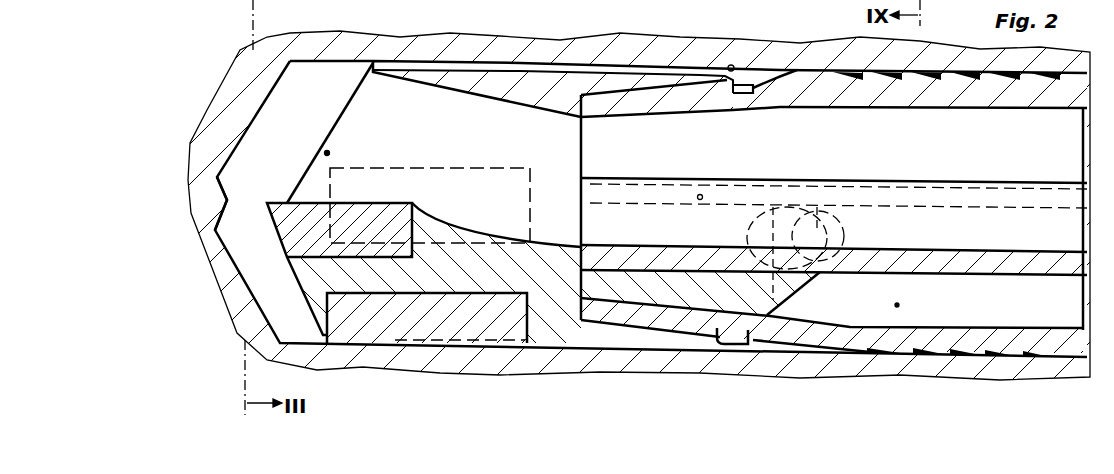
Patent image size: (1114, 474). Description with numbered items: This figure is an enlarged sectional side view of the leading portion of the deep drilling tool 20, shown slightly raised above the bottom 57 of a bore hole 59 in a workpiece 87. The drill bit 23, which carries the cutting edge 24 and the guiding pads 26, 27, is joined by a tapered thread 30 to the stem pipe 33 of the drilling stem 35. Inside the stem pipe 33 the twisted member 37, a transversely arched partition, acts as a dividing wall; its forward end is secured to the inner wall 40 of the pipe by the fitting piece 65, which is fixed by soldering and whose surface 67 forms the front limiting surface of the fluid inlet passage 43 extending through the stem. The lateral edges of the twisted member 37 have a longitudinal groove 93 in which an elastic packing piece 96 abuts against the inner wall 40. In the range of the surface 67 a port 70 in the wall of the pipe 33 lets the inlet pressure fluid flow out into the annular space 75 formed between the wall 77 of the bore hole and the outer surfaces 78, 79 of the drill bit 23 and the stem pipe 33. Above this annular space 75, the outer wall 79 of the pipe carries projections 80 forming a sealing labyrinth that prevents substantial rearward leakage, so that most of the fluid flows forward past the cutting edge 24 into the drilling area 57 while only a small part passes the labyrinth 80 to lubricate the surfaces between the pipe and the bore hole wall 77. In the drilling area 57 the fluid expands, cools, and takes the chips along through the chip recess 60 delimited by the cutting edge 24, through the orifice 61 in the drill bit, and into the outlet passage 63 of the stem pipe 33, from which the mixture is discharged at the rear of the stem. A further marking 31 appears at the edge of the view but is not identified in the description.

The deep drilling tool 20 is at (343, 77).
The drill bit 23 is at (332, 120).
The cutting edge 24 is at (305, 227).
The guiding pad 26 is at (442, 327).
The guiding pad 27 is at (428, 182).
The tapered thread 30 is at (657, 100).
The section line 31 is at (925, 3).
The stem pipe 33 is at (760, 88).
The drilling stem 35 is at (793, 75).
The twisted member 37 is at (923, 181).
The inner wall 40 is at (987, 108).
The fluid inlet passage 43 is at (897, 305).
The bottom of bore hole 57 is at (243, 142).
The bore hole 59 is at (323, 73).
The chip mouth or recess 60 is at (327, 153).
The orifice 61 is at (437, 140).
The outlet passage 63 is at (814, 155).
The fitting piece 65 is at (668, 288).
The surface 67 is at (803, 292).
The port 70 is at (848, 231).
The annular space 75 is at (755, 346).
The wall of the bore hole 77 is at (730, 65).
The outer surface of the drill bit 78 is at (517, 68).
The outer surface of the stem pipe 79 is at (867, 350).
The projections 80 is at (1003, 357).
The workpiece 87 is at (417, 48).
The longitudinal groove 93 is at (640, 188).
The elastic packing piece 96 is at (700, 195).